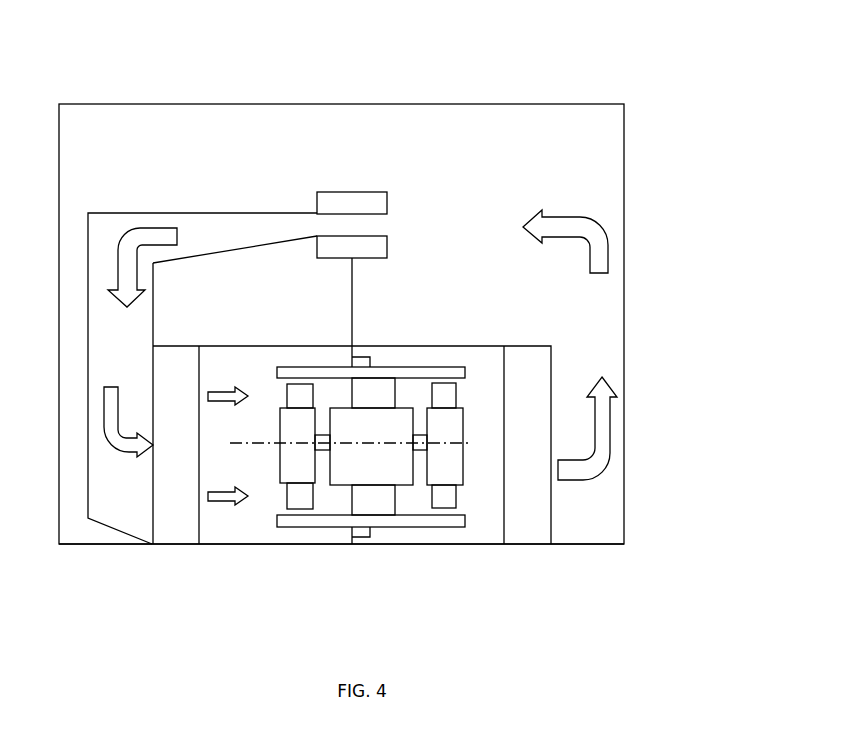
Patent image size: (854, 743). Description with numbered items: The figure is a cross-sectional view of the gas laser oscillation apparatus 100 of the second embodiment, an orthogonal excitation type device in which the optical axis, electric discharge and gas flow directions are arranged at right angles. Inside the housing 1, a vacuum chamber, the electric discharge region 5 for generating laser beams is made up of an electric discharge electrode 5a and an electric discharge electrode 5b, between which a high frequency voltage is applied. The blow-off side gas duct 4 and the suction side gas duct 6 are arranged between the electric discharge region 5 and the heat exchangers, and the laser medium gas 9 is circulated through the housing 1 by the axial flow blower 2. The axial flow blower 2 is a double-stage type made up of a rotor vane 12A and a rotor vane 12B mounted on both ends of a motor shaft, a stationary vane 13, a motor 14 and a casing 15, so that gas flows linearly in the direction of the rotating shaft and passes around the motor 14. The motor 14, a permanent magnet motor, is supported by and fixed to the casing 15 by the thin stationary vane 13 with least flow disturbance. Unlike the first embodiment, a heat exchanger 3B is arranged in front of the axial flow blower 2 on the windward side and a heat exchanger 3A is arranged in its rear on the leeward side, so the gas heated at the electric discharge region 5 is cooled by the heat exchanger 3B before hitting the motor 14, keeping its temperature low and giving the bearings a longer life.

The gas laser oscillation apparatus 100 is at (707, 38).
The housing 1 is at (571, 112).
The axial flow blower 2 is at (465, 555).
The heat exchanger 3A is at (527, 344).
The heat exchanger 3B is at (180, 344).
The blow-off side gas duct 4 is at (268, 345).
The electric discharge region 5 is at (386, 193).
The electric discharge electrode 5a is at (387, 200).
The electric discharge electrode 5b is at (387, 244).
The suction side gas duct 6 is at (145, 212).
The laser medium gas 9 is at (567, 216).
The rotor vane 12A is at (286, 500).
The rotor vane 12B is at (457, 500).
The stationary vane 13 is at (360, 501).
The motor 14 is at (352, 415).
The casing 15 is at (280, 370).